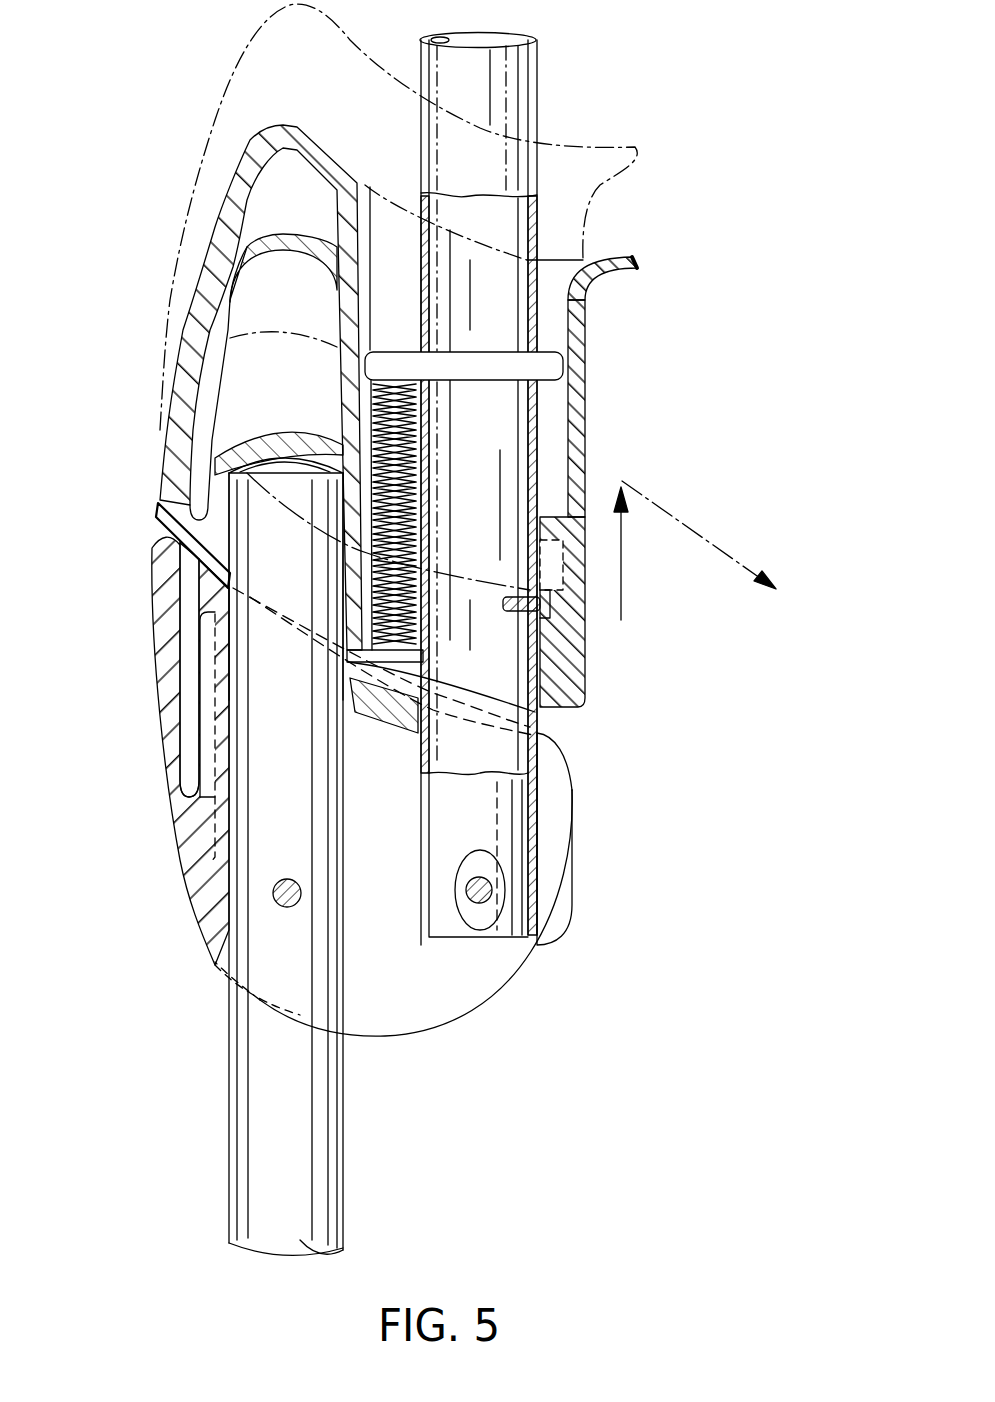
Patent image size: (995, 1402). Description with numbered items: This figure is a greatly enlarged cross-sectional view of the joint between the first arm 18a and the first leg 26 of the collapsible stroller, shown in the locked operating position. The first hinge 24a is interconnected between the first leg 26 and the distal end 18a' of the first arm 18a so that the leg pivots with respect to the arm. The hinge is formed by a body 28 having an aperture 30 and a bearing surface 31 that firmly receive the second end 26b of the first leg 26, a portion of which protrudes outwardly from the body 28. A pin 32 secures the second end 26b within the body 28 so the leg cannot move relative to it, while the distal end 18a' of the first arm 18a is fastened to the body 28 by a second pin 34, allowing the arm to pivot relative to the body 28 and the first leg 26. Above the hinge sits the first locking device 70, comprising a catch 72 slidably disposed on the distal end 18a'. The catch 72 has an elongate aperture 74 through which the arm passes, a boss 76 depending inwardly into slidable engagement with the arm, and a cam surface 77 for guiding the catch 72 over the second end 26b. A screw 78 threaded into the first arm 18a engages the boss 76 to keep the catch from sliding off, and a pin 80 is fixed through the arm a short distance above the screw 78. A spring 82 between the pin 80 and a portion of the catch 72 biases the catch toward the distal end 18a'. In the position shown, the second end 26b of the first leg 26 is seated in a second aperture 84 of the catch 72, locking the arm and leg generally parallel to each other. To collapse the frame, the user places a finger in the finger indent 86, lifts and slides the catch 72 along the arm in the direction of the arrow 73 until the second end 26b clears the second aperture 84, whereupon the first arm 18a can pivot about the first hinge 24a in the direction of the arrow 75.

The first arm 18a is at (525, 473).
The distal end of the first arm 18a' is at (541, 839).
The catch 72 is at (597, 307).
The first locking device 70 is at (600, 362).
The pin 80 is at (533, 370).
The elongate aperture 74 is at (556, 460).
The arrow 75 is at (695, 520).
The arrow 73 is at (621, 567).
The screw 78 is at (540, 612).
The spring 82 is at (413, 507).
The boss 76 is at (545, 567).
The second aperture 84 is at (318, 435).
The finger indent 86 is at (296, 309).
The cam surface 77 is at (170, 532).
The second end of the first leg 26b is at (306, 568).
The first hinge 24a is at (150, 700).
The body 28 is at (183, 807).
The bearing surface 31 is at (230, 885).
The aperture 30 is at (365, 712).
The pin 32 is at (298, 900).
The second pin 34 is at (485, 897).
The first leg 26 is at (298, 1154).